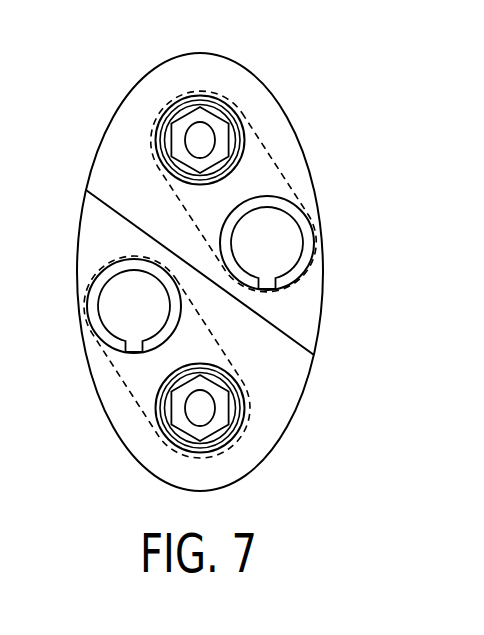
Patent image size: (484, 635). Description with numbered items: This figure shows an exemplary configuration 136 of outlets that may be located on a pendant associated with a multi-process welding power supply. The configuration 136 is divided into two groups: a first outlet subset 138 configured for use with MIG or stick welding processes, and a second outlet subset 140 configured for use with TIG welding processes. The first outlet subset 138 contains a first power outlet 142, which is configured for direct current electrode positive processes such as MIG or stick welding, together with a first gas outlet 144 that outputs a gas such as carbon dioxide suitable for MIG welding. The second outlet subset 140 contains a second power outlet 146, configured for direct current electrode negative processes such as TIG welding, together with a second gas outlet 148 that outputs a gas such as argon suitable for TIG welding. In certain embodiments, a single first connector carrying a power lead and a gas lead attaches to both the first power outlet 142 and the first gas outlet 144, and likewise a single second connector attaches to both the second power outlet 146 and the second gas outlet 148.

The configuration of outlets 136 is at (275, 67).
The first outlet subset 138 is at (284, 168).
The second outlet subset 140 is at (120, 378).
The first power outlet 142 is at (167, 103).
The first gas outlet 144 is at (303, 280).
The second power outlet 146 is at (236, 445).
The second gas outlet 148 is at (100, 268).